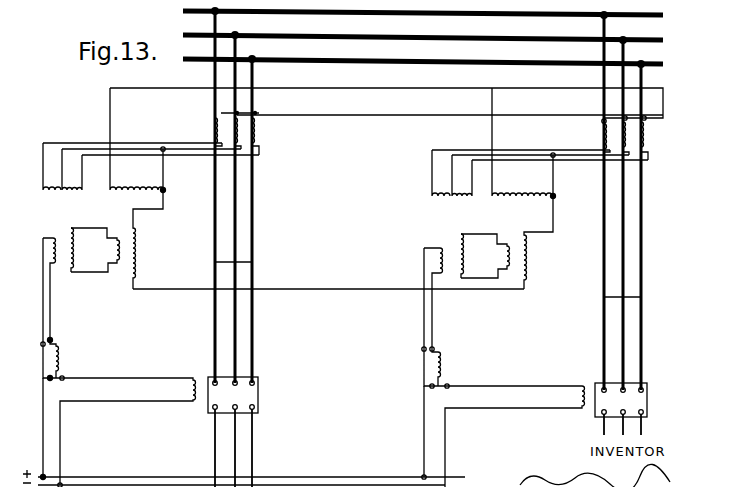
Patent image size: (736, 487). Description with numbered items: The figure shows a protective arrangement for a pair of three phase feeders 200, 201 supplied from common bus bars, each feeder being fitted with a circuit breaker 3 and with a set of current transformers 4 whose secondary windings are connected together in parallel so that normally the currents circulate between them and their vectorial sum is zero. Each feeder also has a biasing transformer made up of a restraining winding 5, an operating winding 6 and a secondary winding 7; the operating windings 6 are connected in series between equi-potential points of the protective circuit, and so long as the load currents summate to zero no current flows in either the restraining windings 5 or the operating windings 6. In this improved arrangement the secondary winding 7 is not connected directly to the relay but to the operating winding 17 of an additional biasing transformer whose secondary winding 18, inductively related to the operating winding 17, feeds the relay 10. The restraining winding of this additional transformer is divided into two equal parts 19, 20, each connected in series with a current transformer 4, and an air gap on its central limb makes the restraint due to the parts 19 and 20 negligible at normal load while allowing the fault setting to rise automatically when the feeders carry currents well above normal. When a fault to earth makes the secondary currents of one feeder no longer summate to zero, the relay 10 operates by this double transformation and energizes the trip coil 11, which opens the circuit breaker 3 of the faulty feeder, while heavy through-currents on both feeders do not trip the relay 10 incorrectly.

The circuit breaker 3 is at (259, 394).
The current transformer 4 is at (228, 125).
The restraining winding 5 is at (148, 188).
The operating winding 6 is at (138, 252).
The secondary winding 7 is at (118, 240).
The relay 10 is at (59, 360).
The trip coil 11 is at (195, 378).
The operating winding 17 is at (75, 246).
The secondary winding 18 is at (50, 238).
The restraining winding part 19 is at (49, 195).
The restraining winding part 20 is at (68, 194).
The three phase feeder 200 is at (248, 264).
The three phase feeder 201 is at (606, 297).